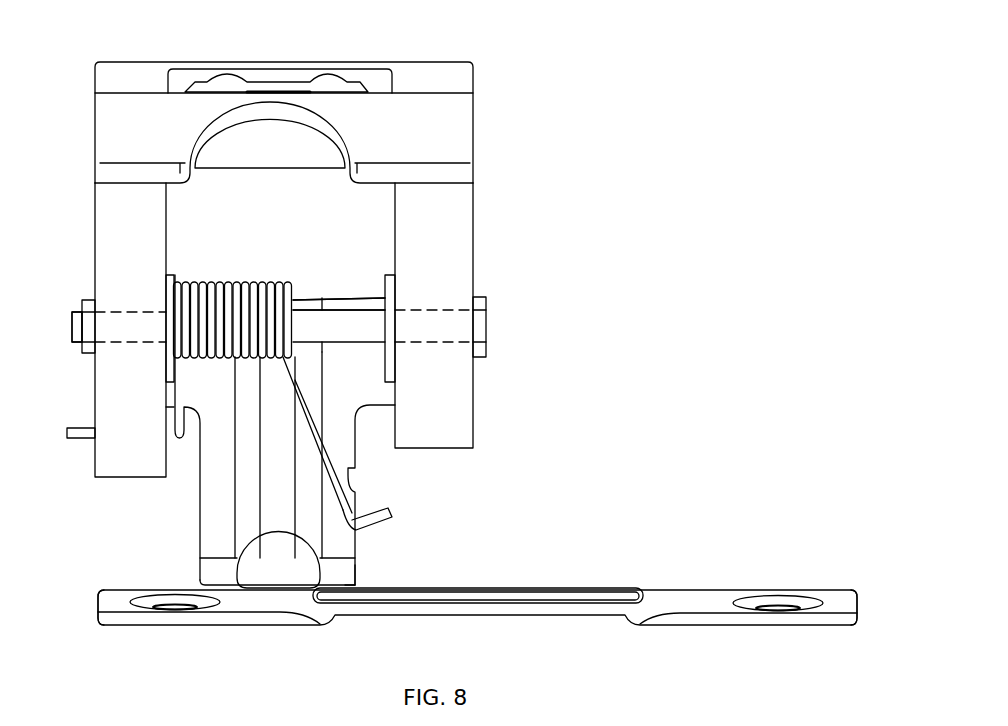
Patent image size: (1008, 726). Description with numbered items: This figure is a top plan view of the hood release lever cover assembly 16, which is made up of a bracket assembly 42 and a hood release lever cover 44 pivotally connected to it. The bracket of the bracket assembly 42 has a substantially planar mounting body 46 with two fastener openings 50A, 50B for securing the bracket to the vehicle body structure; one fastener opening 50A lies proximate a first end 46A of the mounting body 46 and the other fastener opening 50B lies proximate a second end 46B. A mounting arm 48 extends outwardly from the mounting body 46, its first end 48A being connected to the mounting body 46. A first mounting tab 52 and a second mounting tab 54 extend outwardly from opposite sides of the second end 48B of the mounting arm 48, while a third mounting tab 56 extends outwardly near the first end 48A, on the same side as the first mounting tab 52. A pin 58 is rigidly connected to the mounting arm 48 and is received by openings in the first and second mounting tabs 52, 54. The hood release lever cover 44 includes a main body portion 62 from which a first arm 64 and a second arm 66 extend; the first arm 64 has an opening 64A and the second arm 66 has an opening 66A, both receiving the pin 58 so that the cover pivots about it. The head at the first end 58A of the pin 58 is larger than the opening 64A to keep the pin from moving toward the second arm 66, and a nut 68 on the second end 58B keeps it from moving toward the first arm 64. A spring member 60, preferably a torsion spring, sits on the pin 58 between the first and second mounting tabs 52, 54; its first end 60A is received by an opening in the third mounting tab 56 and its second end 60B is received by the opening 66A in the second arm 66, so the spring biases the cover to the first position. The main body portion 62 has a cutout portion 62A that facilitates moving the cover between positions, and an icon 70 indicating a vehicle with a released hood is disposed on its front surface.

The hood release lever cover assembly 16 is at (566, 201).
The bracket assembly 42 is at (670, 589).
The hood release lever cover 44 is at (473, 128).
The mounting body 46 is at (523, 588).
The first end of the mounting body 46A is at (860, 603).
The second end of the mounting body 46B is at (95, 600).
The mounting arm 48 is at (200, 515).
The first end of the mounting arm 48A is at (357, 574).
The second end of the mounting arm 48B is at (338, 298).
The fastener opening 50A is at (778, 600).
The fastener opening 50B is at (168, 602).
The first mounting tab 52 is at (383, 287).
The second mounting tab 54 is at (175, 277).
The third mounting tab 56 is at (355, 542).
The pin 58 is at (352, 328).
The first end of the pin 58A is at (488, 332).
The second end of the pin 58B is at (70, 330).
The spring member 60 is at (252, 282).
The first end of the spring member 60A is at (372, 517).
The second end of the spring member 60B is at (78, 440).
The main body portion 62 is at (132, 78).
The cutout portion 62A is at (277, 113).
The first arm 64 is at (435, 422).
The opening in the first arm 64A is at (448, 310).
The second arm 66 is at (128, 238).
The opening in the second arm 66A is at (118, 312).
The nut 68 is at (82, 310).
The icon 70 is at (197, 68).